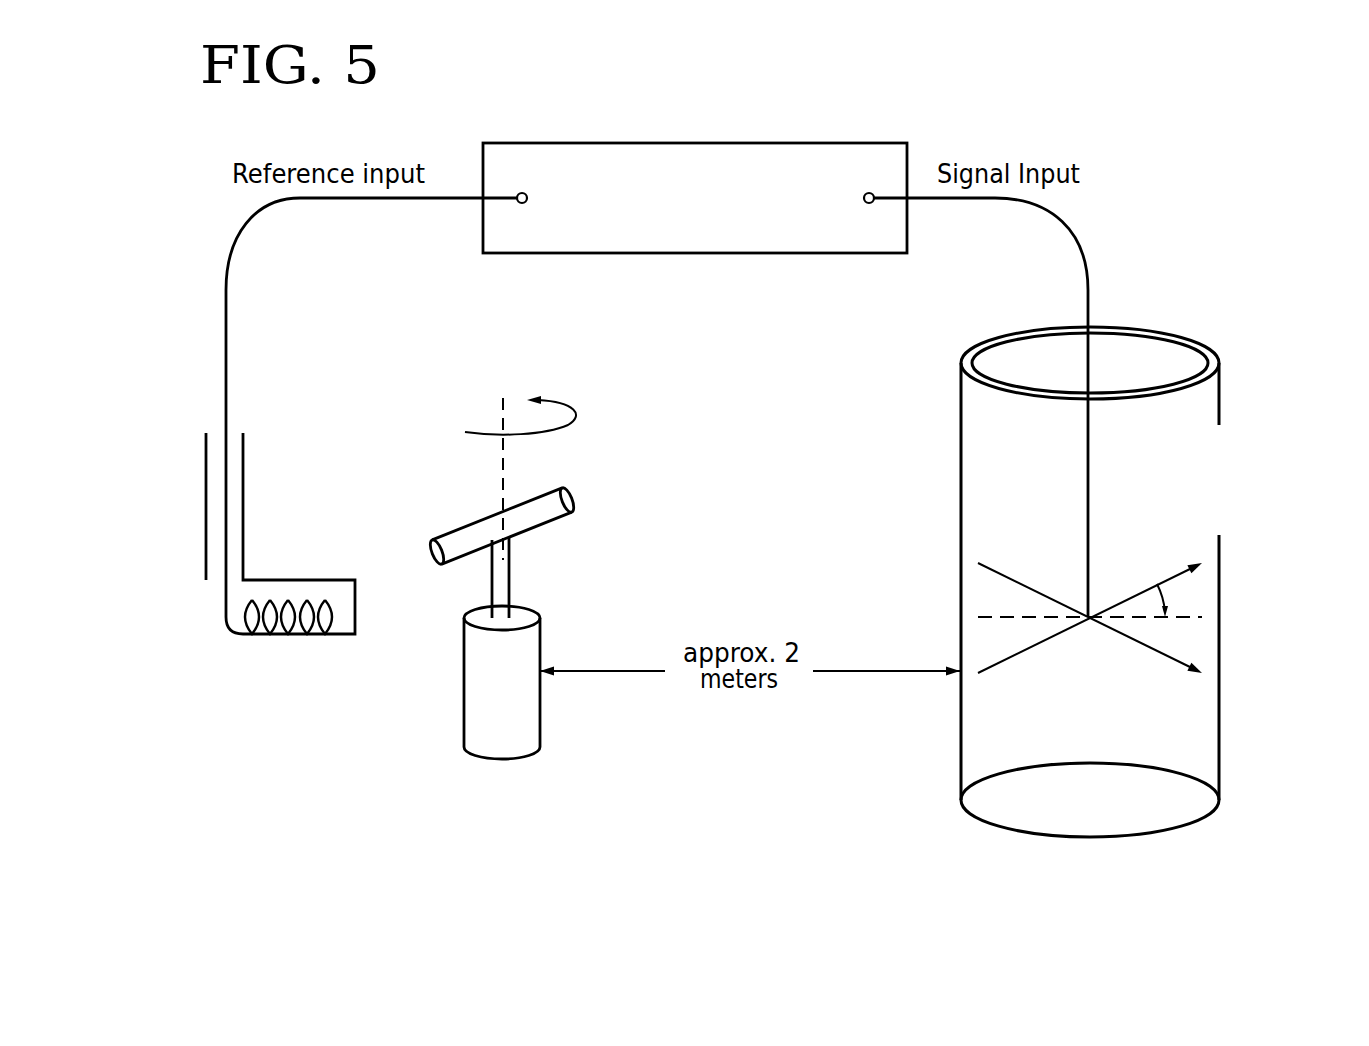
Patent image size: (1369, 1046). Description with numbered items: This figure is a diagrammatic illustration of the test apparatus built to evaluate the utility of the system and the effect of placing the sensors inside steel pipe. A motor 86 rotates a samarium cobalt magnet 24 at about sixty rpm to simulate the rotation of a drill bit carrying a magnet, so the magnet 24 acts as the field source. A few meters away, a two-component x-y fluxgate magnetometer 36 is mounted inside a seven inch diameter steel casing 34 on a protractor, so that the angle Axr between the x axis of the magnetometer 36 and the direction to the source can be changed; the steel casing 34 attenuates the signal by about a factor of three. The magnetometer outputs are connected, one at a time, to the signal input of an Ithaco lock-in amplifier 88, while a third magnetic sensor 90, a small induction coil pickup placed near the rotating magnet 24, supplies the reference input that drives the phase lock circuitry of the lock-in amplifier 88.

The Lockin amplifier 88 is at (735, 143).
The third magnetic sensor 90 is at (289, 573).
The samarium cobalt magnet 24 is at (563, 490).
The motor 86 is at (464, 695).
The steel casing 34 is at (1221, 397).
The fluxgate magnetometer 36 is at (1070, 663).